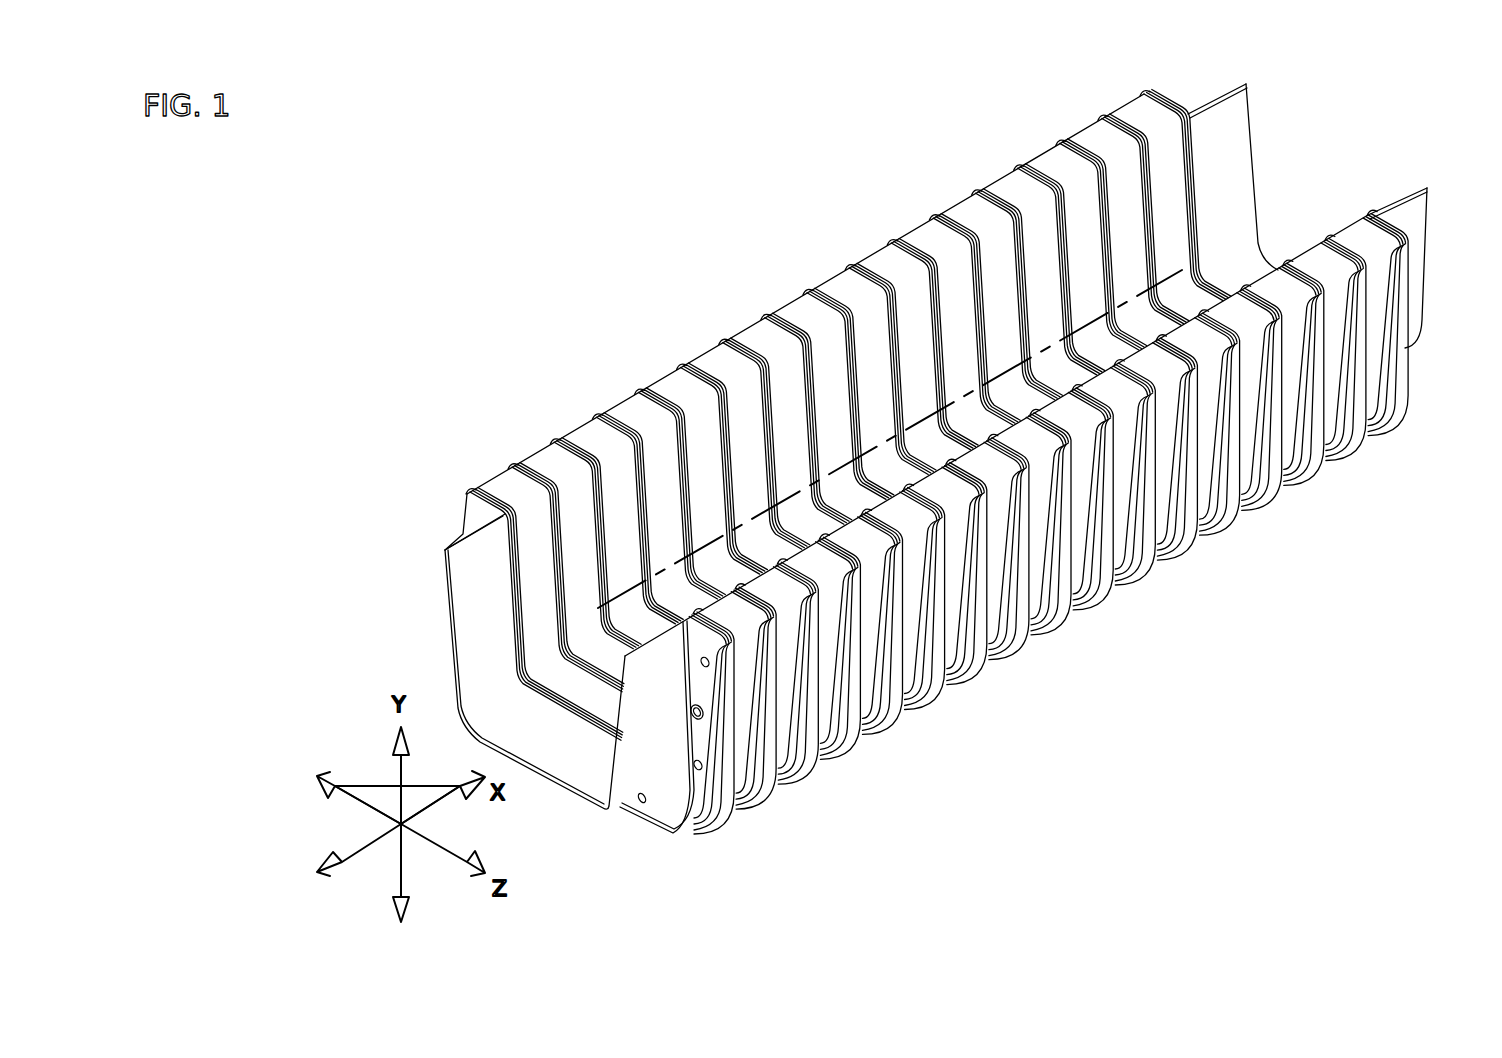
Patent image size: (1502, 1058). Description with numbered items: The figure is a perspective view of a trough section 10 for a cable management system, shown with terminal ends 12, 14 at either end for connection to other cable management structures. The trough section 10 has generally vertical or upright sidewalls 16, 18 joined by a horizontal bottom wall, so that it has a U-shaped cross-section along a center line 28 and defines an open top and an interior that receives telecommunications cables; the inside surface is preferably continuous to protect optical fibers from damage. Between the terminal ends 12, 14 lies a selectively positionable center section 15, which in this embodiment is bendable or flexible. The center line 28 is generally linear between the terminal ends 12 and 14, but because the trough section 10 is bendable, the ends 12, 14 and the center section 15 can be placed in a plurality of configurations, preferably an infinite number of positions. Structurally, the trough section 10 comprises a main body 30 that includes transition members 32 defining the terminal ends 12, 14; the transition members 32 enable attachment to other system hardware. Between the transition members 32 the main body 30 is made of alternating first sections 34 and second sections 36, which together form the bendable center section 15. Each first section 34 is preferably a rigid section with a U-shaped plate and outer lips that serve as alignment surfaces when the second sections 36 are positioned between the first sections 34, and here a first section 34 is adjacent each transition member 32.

The trough section 10 is at (633, 367).
The terminal end 12 is at (462, 542).
The terminal end 14 is at (1254, 118).
The center section 15 is at (760, 323).
The sidewall 16 is at (960, 208).
The sidewall 18 is at (1158, 367).
The center line 28 is at (1052, 338).
The main body 30 is at (556, 445).
The transition member 32 is at (1420, 302).
The first section 34 is at (887, 697).
The second section 36 is at (883, 253).